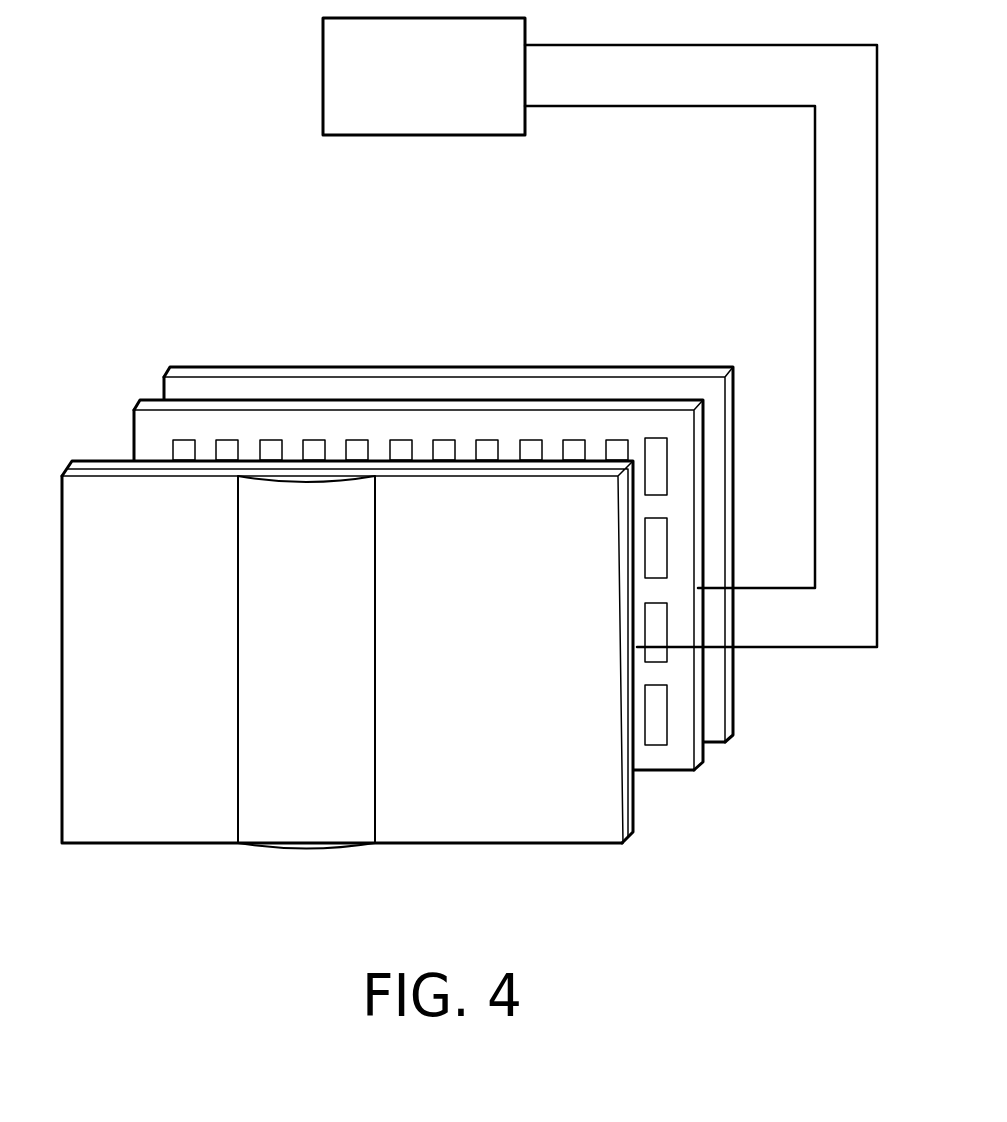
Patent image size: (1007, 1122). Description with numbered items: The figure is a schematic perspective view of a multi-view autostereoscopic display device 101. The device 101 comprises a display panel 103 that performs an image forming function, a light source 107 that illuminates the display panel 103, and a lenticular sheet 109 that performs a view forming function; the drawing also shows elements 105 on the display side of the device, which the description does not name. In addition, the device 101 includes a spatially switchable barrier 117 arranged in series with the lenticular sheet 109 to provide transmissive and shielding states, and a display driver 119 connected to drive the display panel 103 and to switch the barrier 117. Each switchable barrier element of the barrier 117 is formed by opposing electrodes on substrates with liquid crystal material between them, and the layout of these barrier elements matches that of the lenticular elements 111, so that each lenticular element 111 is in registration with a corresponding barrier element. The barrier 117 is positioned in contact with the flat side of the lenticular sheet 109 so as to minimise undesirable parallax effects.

The multi-view autostereoscopic display device 101 is at (112, 326).
The display panel 103 is at (702, 763).
The light sources 105 is at (658, 541).
The light source 107 is at (728, 737).
The lenticular sheet 109 is at (627, 837).
The lenticular element 111 is at (308, 837).
The spatially switchable barrier 117 is at (367, 658).
The display driver 119 is at (401, 93).